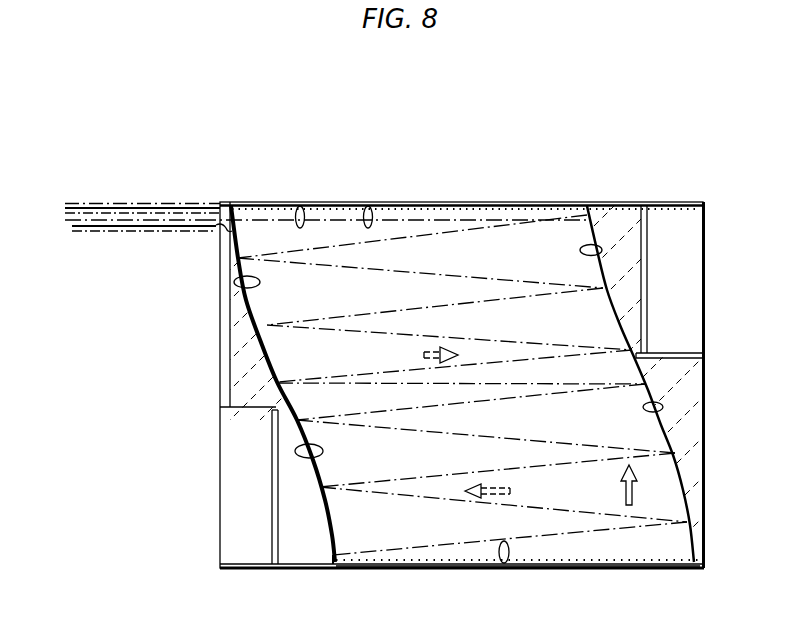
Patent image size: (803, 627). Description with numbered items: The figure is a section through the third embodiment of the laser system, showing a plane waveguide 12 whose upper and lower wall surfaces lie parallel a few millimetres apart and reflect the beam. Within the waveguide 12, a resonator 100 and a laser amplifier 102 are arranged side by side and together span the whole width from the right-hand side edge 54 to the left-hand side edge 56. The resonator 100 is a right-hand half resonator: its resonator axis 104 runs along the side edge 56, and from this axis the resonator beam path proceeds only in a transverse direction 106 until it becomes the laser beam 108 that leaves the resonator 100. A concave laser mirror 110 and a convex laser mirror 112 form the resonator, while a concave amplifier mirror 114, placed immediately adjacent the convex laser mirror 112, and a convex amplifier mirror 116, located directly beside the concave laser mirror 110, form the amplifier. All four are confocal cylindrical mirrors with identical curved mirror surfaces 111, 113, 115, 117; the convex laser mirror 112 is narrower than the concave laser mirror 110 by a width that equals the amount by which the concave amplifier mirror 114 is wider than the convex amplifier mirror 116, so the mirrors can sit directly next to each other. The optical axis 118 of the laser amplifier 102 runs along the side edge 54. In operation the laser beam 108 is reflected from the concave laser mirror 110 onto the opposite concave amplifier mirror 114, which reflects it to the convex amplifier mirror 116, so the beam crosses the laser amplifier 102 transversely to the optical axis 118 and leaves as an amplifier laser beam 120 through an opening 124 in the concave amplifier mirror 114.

The plane waveguide 12 is at (450, 178).
The right-hand side edge 54 is at (365, 205).
The left-hand side edge 56 is at (503, 564).
The resonator 100 is at (434, 520).
The laser amplifier 102 is at (528, 238).
The resonator axis 104 is at (580, 565).
The transverse direction 106 is at (635, 488).
The laser beam 108 is at (548, 386).
The concave laser mirror 110 is at (687, 436).
The curved mirror surface 111 is at (665, 410).
The convex laser mirror 112 is at (297, 507).
The curved mirror surface 113 is at (300, 450).
The concave amplifier mirror 114 is at (240, 350).
The curved mirror surface 115 is at (240, 283).
The convex amplifier mirror 116 is at (620, 273).
The curved mirror surface 117 is at (603, 262).
The optical axis 118 is at (299, 205).
The amplifier laser beam 120 is at (165, 203).
The opening 124 is at (228, 225).